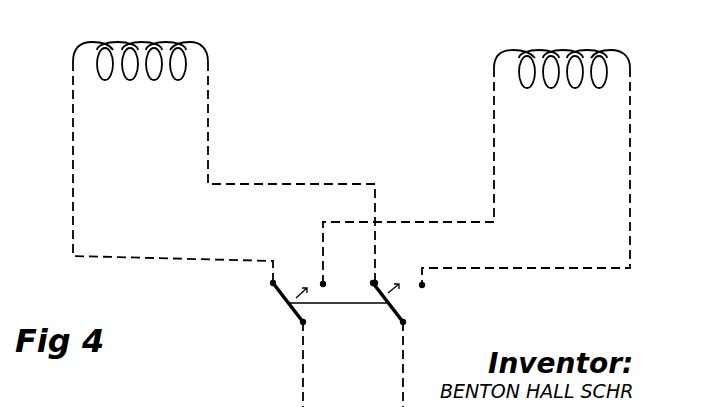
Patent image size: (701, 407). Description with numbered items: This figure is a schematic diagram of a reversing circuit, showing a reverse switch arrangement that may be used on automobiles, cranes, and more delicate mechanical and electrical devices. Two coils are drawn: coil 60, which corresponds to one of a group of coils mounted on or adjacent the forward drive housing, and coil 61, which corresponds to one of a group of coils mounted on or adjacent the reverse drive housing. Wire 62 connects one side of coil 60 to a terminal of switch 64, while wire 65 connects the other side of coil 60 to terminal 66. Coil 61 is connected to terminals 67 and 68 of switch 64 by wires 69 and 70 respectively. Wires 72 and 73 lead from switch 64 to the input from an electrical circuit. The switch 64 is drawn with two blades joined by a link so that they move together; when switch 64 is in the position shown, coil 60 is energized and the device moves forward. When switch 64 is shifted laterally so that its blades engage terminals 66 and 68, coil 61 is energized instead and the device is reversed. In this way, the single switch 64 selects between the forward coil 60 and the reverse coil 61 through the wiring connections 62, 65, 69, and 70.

The coil 60 is at (138, 42).
The coil 61 is at (568, 52).
The wire 62 is at (72, 116).
The wire 65 is at (210, 129).
The wire 69 is at (493, 99).
The wire 70 is at (634, 119).
The terminal 66 is at (373, 282).
The terminal 67 is at (321, 282).
The terminal 68 is at (425, 286).
The switch 64 is at (340, 304).
The wire 72 is at (305, 381).
The wire 73 is at (405, 368).